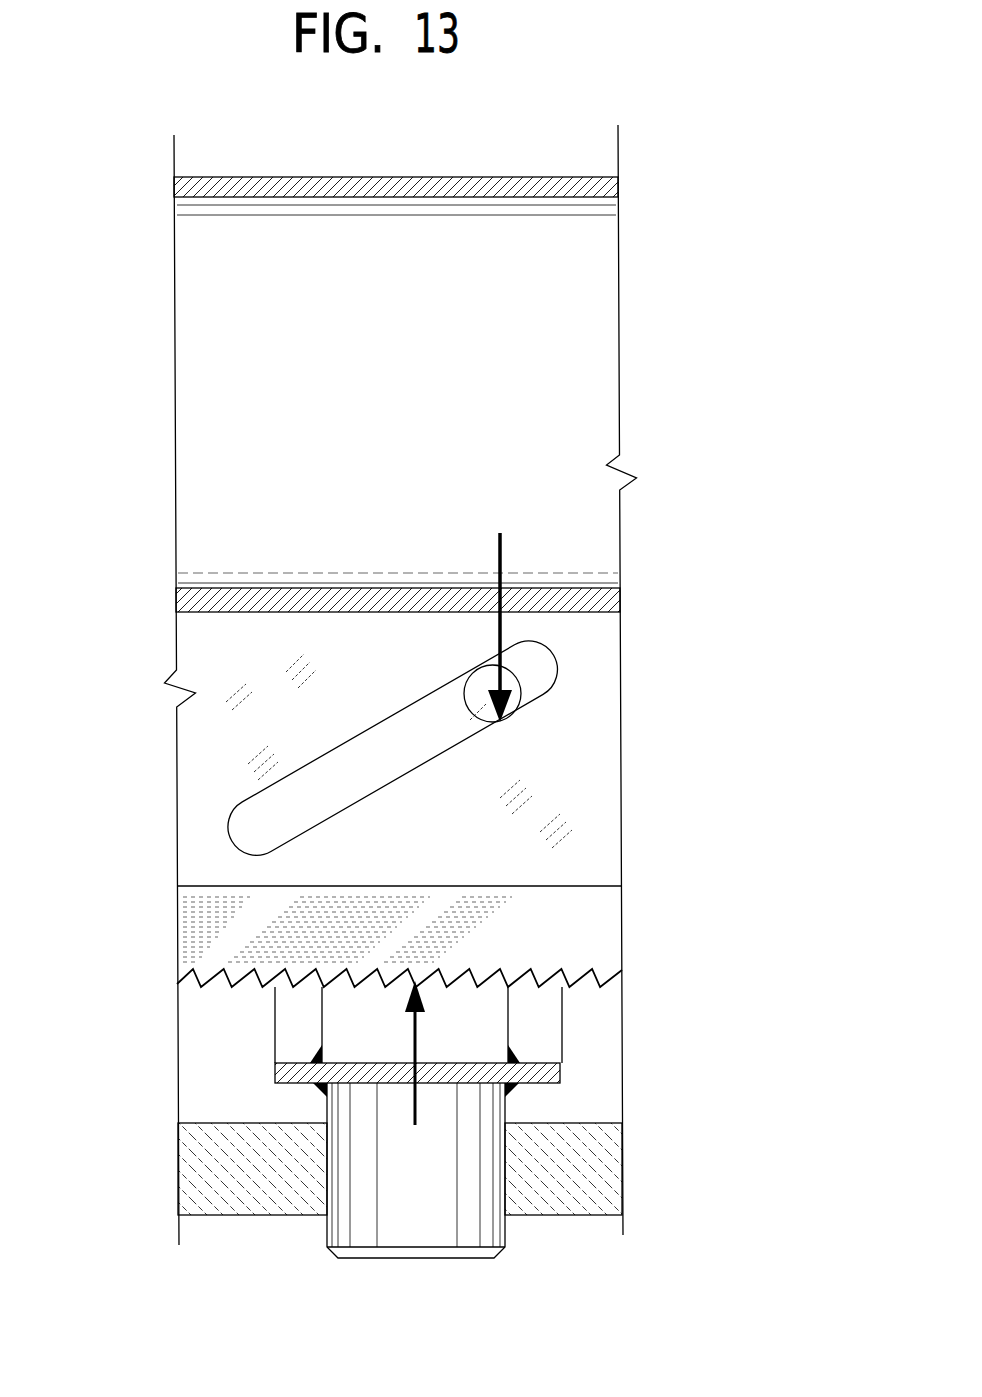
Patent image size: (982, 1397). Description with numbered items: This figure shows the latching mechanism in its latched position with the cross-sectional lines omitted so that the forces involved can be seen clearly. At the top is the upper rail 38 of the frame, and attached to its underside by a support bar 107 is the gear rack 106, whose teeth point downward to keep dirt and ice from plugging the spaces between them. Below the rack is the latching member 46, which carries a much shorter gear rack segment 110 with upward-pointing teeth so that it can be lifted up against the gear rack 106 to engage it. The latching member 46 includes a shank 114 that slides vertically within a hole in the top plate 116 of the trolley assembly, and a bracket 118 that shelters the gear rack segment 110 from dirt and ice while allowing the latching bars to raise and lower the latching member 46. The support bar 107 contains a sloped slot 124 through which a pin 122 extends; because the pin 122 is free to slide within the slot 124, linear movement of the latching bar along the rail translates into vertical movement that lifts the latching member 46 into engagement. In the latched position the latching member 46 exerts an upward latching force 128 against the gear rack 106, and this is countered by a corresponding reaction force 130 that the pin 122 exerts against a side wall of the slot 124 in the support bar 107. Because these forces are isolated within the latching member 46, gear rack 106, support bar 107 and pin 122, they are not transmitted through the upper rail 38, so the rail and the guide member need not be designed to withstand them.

The upper rail 38 is at (390, 177).
The sloped slots 124 is at (308, 764).
The pins 122 is at (468, 712).
The reaction force 130 is at (498, 640).
The support bar 107 is at (559, 886).
The gear rack 106 is at (215, 948).
The gear rack segment 110 is at (553, 1049).
The upward latching force 128 is at (420, 1048).
The bracket 118 is at (547, 1092).
The latching member 46 is at (283, 1088).
The shank 114 is at (323, 1227).
The top plate 116 is at (593, 1215).